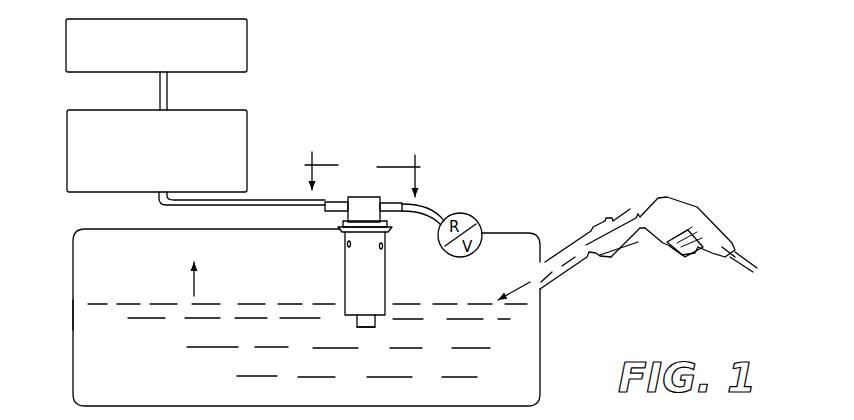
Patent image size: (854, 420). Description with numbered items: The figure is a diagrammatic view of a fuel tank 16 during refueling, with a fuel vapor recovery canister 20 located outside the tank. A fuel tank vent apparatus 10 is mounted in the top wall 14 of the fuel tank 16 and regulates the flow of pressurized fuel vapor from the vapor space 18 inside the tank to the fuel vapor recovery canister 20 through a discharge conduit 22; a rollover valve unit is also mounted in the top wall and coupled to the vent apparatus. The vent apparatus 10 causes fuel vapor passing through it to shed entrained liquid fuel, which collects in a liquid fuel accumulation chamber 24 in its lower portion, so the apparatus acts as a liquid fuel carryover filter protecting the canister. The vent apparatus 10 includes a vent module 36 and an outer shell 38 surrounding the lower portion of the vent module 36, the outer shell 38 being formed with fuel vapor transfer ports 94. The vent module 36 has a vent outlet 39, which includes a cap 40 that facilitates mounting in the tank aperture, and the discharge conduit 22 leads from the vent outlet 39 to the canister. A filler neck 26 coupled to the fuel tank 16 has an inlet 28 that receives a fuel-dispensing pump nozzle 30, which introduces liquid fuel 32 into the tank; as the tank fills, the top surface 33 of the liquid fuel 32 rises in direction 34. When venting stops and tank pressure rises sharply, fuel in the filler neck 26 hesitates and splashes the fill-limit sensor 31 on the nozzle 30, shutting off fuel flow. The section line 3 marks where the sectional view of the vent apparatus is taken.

The section line 3- 3 is at (362, 162).
The fuel tank vent apparatus 10 is at (336, 268).
The top wall 14 is at (506, 231).
The fuel tank 16 is at (64, 314).
The vapor space 18 is at (101, 258).
The fuel vapor recovery canister 20 is at (67, 155).
The discharge conduit 22 is at (271, 200).
The liquid fuel accumulation chamber 24 is at (368, 303).
The filler neck 26 is at (562, 248).
The inlet 28 is at (608, 221).
The fuel-dispensing pump nozzle 30 is at (678, 218).
The fill-limit sensor 31 is at (598, 249).
The liquid fuel 32 is at (152, 372).
The top surface 33 is at (165, 303).
The direction 34 is at (197, 290).
The vent module 36 is at (384, 195).
The outer shell 38 is at (393, 326).
The vent outlet 39 is at (326, 217).
The cap 40 is at (362, 194).
The fuel vapor transfer port 94 is at (347, 243).